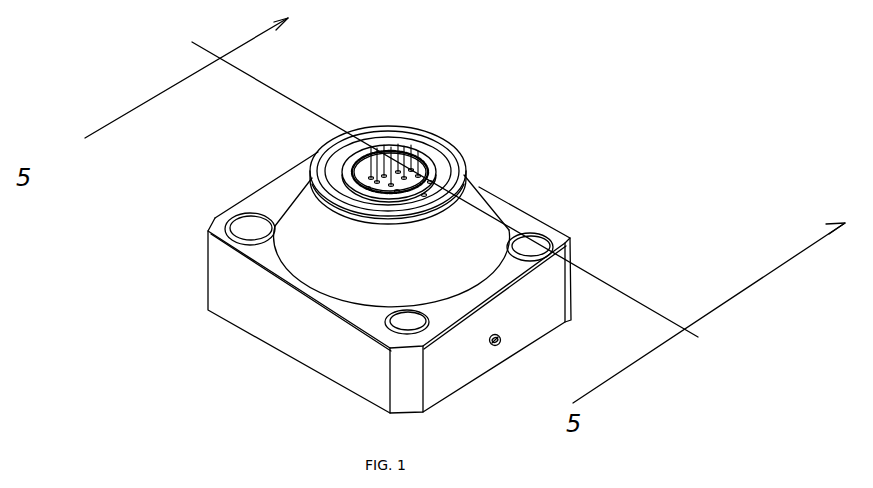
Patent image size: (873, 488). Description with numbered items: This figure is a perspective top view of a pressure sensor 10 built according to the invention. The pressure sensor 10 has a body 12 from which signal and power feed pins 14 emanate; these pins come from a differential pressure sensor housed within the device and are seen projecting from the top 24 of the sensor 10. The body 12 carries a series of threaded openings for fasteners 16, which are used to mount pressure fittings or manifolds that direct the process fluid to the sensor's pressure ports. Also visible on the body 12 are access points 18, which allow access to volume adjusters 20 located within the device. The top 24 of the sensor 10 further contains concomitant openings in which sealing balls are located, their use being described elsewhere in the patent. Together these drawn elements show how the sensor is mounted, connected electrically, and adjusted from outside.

The pressure sensor 10 is at (520, 138).
The body 12 is at (318, 334).
The signal and power feed pins 14 is at (385, 158).
The threaded openings for fasteners 16 is at (247, 236).
The access points 18 is at (497, 347).
The volume adjusters 20 is at (501, 339).
The top 24 is at (418, 153).